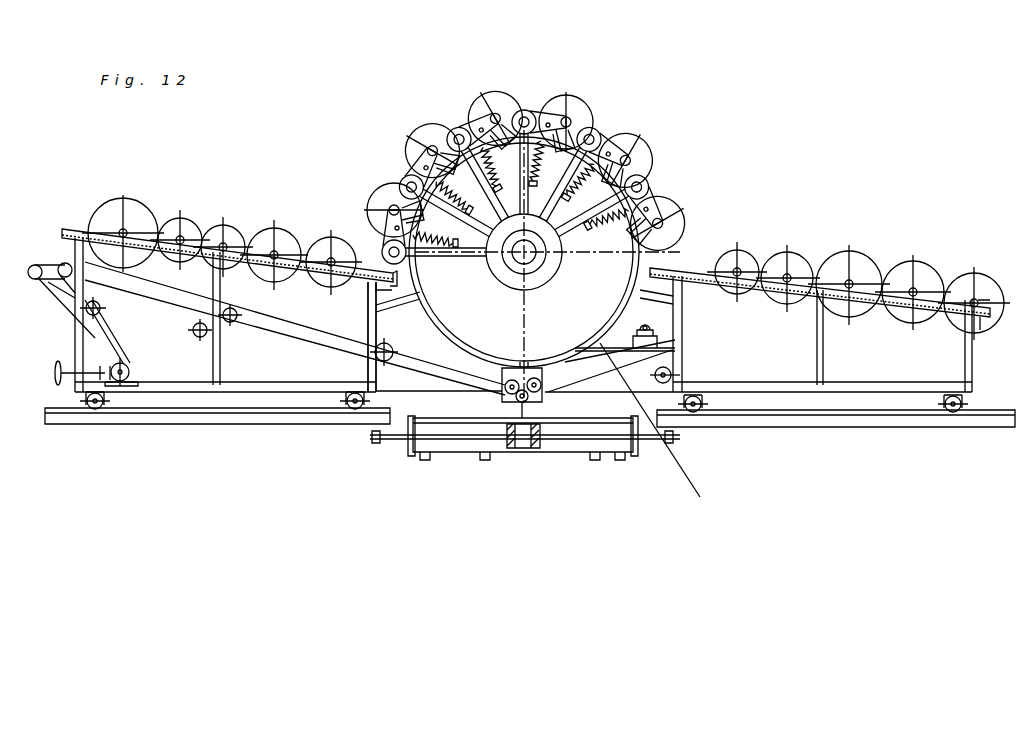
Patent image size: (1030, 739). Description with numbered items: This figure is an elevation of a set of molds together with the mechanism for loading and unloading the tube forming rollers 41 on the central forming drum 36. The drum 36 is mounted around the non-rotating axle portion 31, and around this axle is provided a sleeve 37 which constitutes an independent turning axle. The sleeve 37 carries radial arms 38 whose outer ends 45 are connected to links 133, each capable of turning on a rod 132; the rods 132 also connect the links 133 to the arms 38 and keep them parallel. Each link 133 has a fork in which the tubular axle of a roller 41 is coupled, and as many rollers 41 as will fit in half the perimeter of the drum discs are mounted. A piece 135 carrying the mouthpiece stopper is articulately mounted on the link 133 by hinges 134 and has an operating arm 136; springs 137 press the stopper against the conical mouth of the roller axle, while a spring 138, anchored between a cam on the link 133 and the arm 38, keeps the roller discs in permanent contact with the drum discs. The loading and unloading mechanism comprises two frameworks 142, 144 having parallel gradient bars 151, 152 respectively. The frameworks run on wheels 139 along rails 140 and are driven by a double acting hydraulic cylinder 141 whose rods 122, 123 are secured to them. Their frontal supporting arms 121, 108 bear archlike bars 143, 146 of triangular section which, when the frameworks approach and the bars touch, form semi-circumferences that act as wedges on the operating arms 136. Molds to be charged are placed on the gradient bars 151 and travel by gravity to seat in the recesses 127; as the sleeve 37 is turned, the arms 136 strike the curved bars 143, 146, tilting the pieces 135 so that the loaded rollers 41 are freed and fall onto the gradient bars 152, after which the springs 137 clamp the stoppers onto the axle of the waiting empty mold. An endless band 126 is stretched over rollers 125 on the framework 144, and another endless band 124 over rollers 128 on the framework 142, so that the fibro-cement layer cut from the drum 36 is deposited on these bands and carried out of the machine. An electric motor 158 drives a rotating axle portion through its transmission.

The axle portion 31 is at (530, 268).
The forming drum 36 is at (600, 245).
The sleeve 37 is at (516, 282).
The radial arm 38 is at (450, 253).
The tube forming roller 41 is at (227, 238).
The outer end 45 is at (526, 108).
The supporting arm 108 is at (683, 307).
The supporting arm 121 is at (372, 310).
The rod 122 is at (650, 443).
The rod 123 is at (397, 438).
The endless band 124 is at (585, 386).
The roller 125 is at (62, 264).
The endless band 126 is at (167, 318).
The recess 127 is at (388, 278).
The roller 128 is at (645, 330).
The rod 132 is at (593, 140).
The link 133 is at (527, 120).
The hinge 134 is at (557, 122).
The piece 135 is at (575, 120).
The operating arm 136 is at (453, 132).
The spring 137 is at (613, 147).
The spring 138 is at (400, 304).
The wheel 139 is at (92, 406).
The rail 140 is at (250, 412).
The double acting hydraulic cylinder 141 is at (478, 455).
The framework 142 is at (767, 384).
The archlike bar 143 is at (660, 425).
The framework 144 is at (180, 384).
The archlike bar 146 is at (460, 360).
The gradient bar 151 is at (80, 236).
The gradient bar 152 is at (675, 270).
The electric motor 158 is at (504, 398).